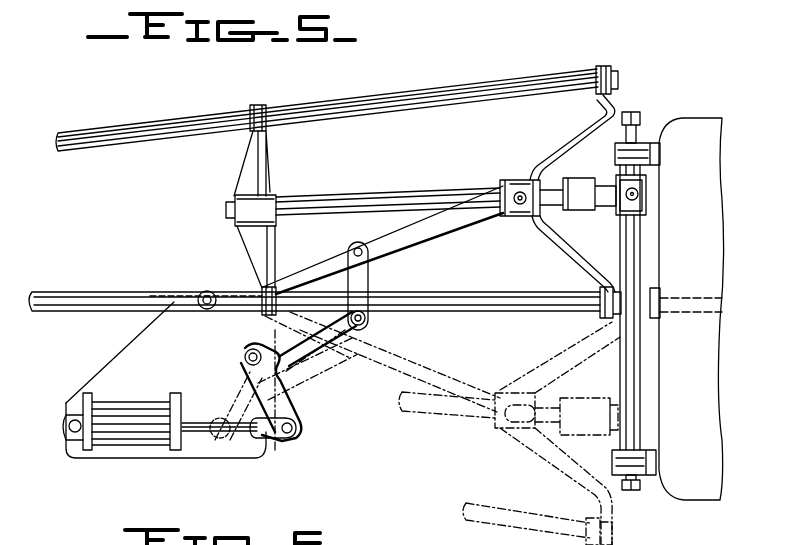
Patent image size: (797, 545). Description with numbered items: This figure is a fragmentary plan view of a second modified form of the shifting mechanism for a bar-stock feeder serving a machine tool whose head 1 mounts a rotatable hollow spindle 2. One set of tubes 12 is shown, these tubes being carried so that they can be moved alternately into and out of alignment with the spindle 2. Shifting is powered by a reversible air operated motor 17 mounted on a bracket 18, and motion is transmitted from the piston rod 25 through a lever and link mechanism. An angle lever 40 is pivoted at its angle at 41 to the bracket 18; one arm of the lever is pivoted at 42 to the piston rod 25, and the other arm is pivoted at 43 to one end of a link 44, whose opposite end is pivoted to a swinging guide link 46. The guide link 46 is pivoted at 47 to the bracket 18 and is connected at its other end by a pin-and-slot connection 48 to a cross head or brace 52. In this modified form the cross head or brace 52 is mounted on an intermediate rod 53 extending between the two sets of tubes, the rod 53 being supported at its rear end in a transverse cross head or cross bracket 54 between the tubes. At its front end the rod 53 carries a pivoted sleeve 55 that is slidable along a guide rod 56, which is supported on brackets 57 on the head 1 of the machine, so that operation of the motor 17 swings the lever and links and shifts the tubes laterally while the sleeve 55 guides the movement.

The head 1 is at (701, 126).
The hollow spindle 2 is at (672, 296).
The set of tubes 12 is at (398, 103).
The reversible air operated motor 17 is at (117, 411).
The bracket 18 is at (132, 347).
The piston rod 25 is at (197, 424).
The angle lever 40 is at (290, 350).
The pivot 41 is at (244, 357).
The pivot 42 is at (296, 430).
The pivot 43 is at (366, 320).
The link 44 is at (370, 272).
The swinging guide link 46 is at (332, 266).
The pivot 47 is at (207, 290).
The pin-and-slot connection 48 is at (513, 218).
The cross head or brace 52 is at (559, 131).
The intermediate rod 53 is at (410, 194).
The transverse cross head or cross bracket 54 is at (273, 196).
The pivoted sleeve 55 is at (648, 191).
The guide rod 56 is at (641, 251).
The brackets 57 is at (641, 144).